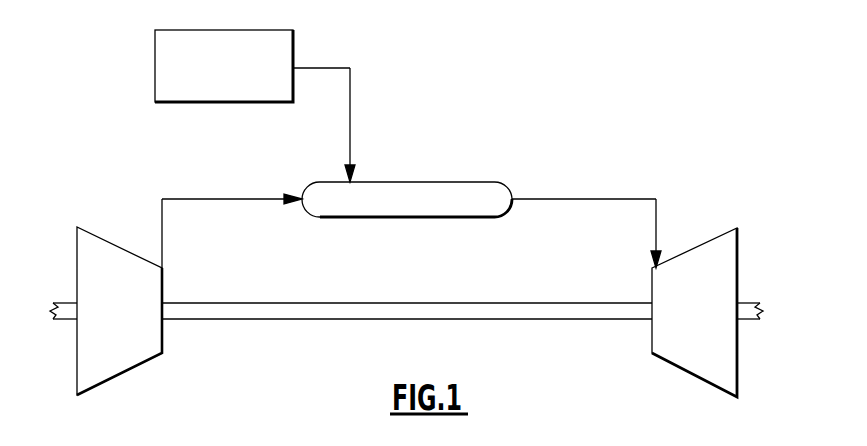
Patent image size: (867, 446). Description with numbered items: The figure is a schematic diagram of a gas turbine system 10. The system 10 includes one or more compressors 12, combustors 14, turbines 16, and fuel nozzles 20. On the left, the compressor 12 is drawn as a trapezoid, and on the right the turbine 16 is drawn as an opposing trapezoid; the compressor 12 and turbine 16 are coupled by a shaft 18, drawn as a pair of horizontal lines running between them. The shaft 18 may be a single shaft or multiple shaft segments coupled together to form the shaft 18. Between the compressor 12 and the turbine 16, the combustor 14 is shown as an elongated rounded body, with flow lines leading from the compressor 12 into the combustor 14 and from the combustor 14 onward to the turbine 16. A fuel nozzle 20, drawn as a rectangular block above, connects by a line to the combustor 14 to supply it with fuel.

The gas turbine system 10 is at (635, 130).
The compressor 12 is at (120, 382).
The combustor 14 is at (418, 182).
The turbine 16 is at (737, 257).
The shaft 18 is at (522, 321).
The fuel nozzle 20 is at (293, 40).